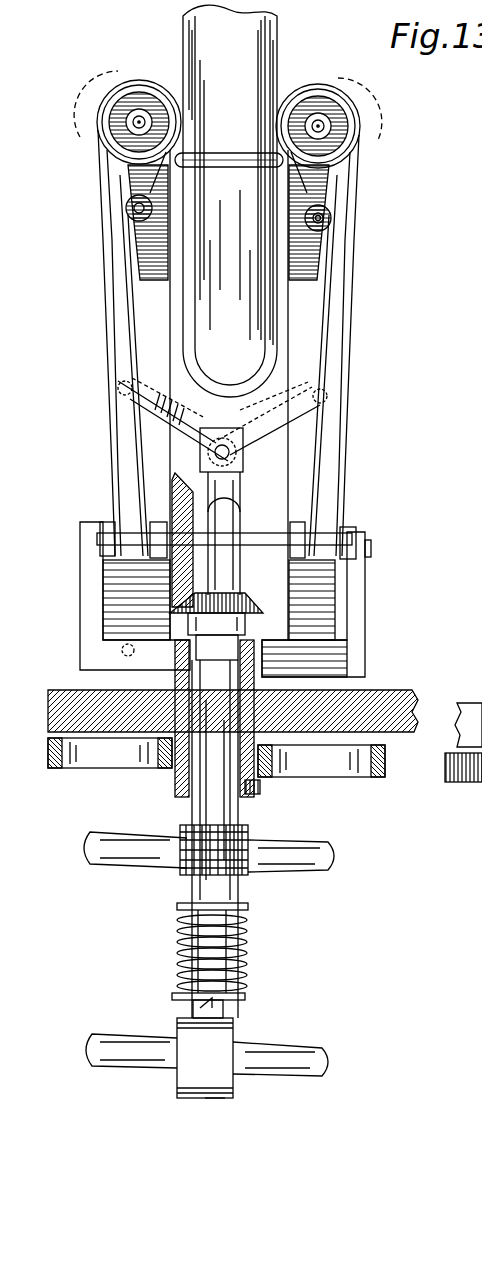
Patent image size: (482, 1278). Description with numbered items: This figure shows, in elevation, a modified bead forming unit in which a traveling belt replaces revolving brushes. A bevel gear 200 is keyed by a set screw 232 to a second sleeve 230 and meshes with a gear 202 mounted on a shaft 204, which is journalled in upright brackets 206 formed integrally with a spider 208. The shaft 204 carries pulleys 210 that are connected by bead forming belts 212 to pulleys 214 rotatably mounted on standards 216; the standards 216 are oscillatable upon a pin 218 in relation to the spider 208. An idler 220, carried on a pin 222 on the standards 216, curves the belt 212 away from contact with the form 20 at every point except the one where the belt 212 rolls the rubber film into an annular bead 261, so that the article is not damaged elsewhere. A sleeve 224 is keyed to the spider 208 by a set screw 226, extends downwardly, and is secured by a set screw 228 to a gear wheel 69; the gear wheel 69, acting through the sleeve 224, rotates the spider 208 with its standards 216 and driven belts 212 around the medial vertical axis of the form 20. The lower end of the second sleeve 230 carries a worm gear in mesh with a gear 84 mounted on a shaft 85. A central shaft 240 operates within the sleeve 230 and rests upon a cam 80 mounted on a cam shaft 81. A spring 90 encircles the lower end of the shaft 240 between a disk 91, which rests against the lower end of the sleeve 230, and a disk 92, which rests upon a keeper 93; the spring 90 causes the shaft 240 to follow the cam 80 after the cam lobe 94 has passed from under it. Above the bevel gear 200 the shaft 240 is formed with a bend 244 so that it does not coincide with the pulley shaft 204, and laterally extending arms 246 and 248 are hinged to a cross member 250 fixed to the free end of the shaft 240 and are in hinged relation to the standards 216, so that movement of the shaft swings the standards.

The form 20 is at (207, 31).
The annular bead 261 is at (222, 190).
The pulley 214 is at (118, 128).
The idler 220 is at (128, 212).
The pin 222 is at (320, 218).
The standard 216 is at (150, 290).
The bead forming belt 212 is at (128, 343).
The laterally extending arm 246 is at (170, 407).
The laterally extending arm 248 is at (275, 422).
The cross member 250 is at (236, 472).
The bend 244 is at (232, 532).
The shaft 204 is at (272, 537).
The pulley 210 is at (103, 522).
The upright bracket 206 is at (90, 575).
The gear 202 is at (170, 585).
The pin 218 is at (170, 650).
The bevel gear 200 is at (260, 605).
The set screw 232 is at (246, 630).
The spider 208 is at (333, 650).
The sleeve 224 is at (188, 690).
The set screw 226 is at (268, 686).
The gear wheel 69 is at (112, 760).
The second sleeve 230 is at (210, 805).
The set screw 228 is at (252, 802).
The gear 84 is at (267, 820).
The shaft 85 is at (328, 842).
The disk 91 is at (238, 908).
The spring 90 is at (253, 948).
The disk 92 is at (228, 995).
The central shaft 240 is at (217, 1008).
The keeper 93 is at (207, 1008).
The cam shaft 81 is at (287, 1050).
The cam 80 is at (200, 1062).
The cam lobe 94 is at (213, 1100).